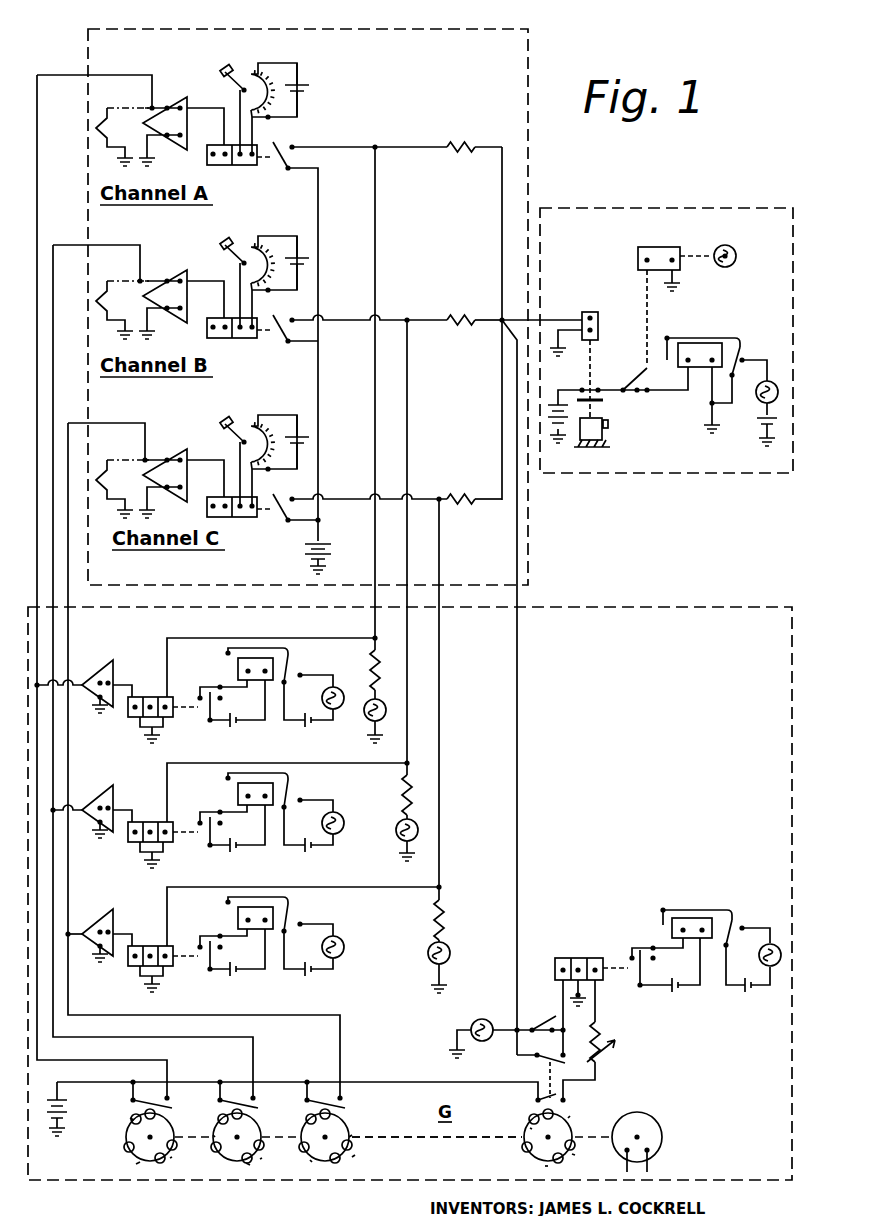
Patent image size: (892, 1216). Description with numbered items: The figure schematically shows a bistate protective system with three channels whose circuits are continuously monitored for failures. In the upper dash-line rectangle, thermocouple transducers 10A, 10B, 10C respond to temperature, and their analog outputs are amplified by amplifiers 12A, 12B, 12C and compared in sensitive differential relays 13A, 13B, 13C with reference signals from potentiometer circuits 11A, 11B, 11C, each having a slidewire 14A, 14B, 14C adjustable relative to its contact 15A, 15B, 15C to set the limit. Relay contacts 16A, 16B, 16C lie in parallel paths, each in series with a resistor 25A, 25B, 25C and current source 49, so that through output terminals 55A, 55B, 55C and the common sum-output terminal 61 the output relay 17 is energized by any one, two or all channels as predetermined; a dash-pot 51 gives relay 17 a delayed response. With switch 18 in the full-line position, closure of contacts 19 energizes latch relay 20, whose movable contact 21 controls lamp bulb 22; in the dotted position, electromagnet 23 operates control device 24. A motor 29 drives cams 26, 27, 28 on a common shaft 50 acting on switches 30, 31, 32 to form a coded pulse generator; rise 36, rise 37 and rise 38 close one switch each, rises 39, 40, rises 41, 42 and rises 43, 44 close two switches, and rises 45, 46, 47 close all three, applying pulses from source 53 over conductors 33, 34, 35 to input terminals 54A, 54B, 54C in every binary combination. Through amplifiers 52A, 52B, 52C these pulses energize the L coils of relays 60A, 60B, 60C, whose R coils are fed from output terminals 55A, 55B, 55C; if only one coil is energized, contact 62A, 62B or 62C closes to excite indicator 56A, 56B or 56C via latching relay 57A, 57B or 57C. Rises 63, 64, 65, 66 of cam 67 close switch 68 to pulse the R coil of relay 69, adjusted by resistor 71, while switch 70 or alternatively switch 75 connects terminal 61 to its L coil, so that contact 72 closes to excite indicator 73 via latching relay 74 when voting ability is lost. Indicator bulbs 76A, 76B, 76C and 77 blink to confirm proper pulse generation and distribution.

The transducer 10A is at (98, 128).
The transducer 10B is at (98, 300).
The transducer 10C is at (98, 480).
The potentiometer circuit 11A is at (268, 85).
The potentiometer circuit 11B is at (270, 258).
The potentiometer circuit 11C is at (270, 437).
The amplifier 12A is at (168, 107).
The amplifier 12B is at (168, 280).
The amplifier 12C is at (168, 459).
The differential relay 13A is at (215, 166).
The differential relay 13B is at (232, 339).
The differential relay 13C is at (228, 518).
The slidewire 14A is at (250, 88).
The slidewire 14B is at (258, 262).
The slidewire 14C is at (258, 440).
The contact 15A is at (247, 88).
The contact 15B is at (247, 262).
The contact 15C is at (247, 440).
The relay contact 16A is at (284, 141).
The relay contact 16B is at (288, 333).
The relay contact 16C is at (288, 516).
The output relay 17 is at (598, 318).
The switch 18 is at (628, 396).
The contacts 19 is at (603, 401).
The latch relay 20 is at (714, 332).
The movable contact 21 is at (743, 371).
The lamp bulb 22 is at (769, 381).
The electromagnet 23 is at (652, 252).
The control device 24 is at (736, 258).
The resistor 25A is at (463, 158).
The resistor 25B is at (470, 292).
The resistor 25C is at (455, 513).
The cam 26 is at (125, 1140).
The cam 27 is at (222, 1155).
The cam 28 is at (314, 1135).
The motor 29 is at (662, 1137).
The switch 30 is at (130, 1094).
The switch 31 is at (250, 1096).
The switch 32 is at (338, 1094).
The conductor 33 is at (37, 192).
The conductor 34 is at (53, 355).
The conductor 35 is at (68, 560).
The cam rise 36 is at (130, 1118).
The cam rise 37 is at (213, 1135).
The cam rise 38 is at (312, 1162).
The cam rise 39 is at (136, 1164).
The cam rise 40 is at (250, 1165).
The cam rise 41 is at (172, 1157).
The cam rise 42 is at (355, 1155).
The cam rise 43 is at (262, 1158).
The cam rise 44 is at (352, 1135).
The cam rise 45 is at (173, 1104).
The cam rise 46 is at (260, 1100).
The cam rise 47 is at (345, 1108).
The current source 49 is at (310, 553).
The shaft 50 is at (437, 1153).
The dash-pot 51 is at (606, 436).
The amplifier 52A is at (100, 665).
The amplifier 52B is at (100, 790).
The amplifier 52C is at (100, 914).
The source 53 is at (66, 1108).
The input terminal 54A is at (153, 106).
The input terminal 54B is at (141, 280).
The input terminal 54C is at (146, 459).
The output terminal 55A is at (375, 148).
The output terminal 55B is at (407, 321).
The output terminal 55C is at (439, 500).
The indicator 56A is at (341, 688).
The indicator 56B is at (341, 813).
The indicator 56C is at (341, 937).
The latching relay 57A is at (255, 660).
The latching relay 57B is at (255, 785).
The latching relay 57C is at (255, 909).
The relay 60A is at (145, 697).
The relay 60B is at (145, 822).
The relay 60C is at (145, 946).
The sum-output terminal 61 is at (502, 321).
The relay contact 62A is at (208, 710).
The relay contact 62B is at (208, 835).
The relay contact 62C is at (208, 959).
The cam rise 63 is at (545, 1166).
The cam rise 64 is at (575, 1155).
The cam rise 65 is at (572, 1128).
The cam rise 66 is at (570, 1116).
The cam 67 is at (530, 1128).
The switch 68 is at (532, 1097).
The relay 69 is at (577, 958).
The switch 70 is at (537, 1058).
The resistor 71 is at (606, 1062).
The relay contact 72 is at (642, 975).
The indicator 73 is at (772, 943).
The latching relay 74 is at (687, 918).
The switch 75 is at (549, 1024).
The indicator bulb 76A is at (367, 720).
The indicator bulb 76B is at (397, 828).
The indicator bulb 76C is at (451, 947).
The indicator bulb 77 is at (484, 1025).